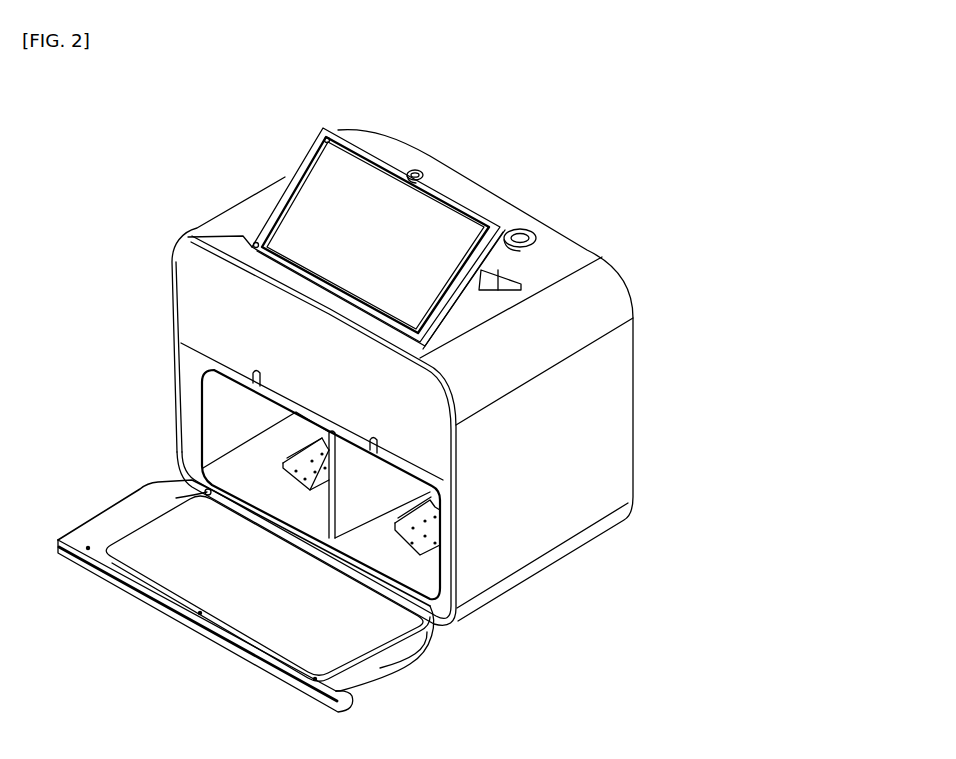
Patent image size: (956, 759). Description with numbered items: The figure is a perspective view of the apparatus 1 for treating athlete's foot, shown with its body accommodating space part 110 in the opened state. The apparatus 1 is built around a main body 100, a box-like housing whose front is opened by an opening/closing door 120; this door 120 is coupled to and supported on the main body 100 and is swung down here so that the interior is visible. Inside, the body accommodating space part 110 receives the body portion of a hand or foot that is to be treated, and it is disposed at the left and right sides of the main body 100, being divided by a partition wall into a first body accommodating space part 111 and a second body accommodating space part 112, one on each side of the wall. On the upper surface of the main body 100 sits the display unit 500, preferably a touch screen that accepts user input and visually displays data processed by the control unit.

The apparatus for treating athlete's foot 1 is at (589, 203).
The main body 100 is at (613, 417).
The body accommodating space part 110 is at (97, 336).
The first body accommodating space part 111 is at (222, 396).
The second body accommodating space part 112 is at (357, 509).
The opening/closing door 120 is at (172, 604).
The display unit 500 is at (430, 216).